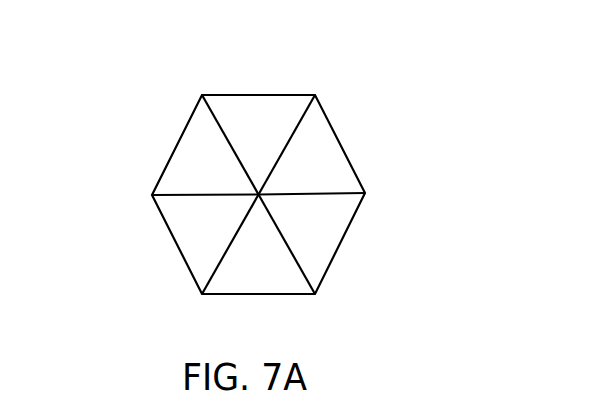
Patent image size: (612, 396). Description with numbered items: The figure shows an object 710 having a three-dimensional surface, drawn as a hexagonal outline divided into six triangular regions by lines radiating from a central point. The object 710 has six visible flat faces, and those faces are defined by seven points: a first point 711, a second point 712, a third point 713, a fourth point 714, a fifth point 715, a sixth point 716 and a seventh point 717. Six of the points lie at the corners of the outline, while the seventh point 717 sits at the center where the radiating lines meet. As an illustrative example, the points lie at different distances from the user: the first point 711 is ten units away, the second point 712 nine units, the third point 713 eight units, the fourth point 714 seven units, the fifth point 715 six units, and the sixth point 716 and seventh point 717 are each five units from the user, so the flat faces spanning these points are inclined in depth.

The object 710 is at (168, 114).
The first point 711 is at (152, 195).
The second point 712 is at (202, 95).
The third point 713 is at (315, 95).
The fourth point 714 is at (365, 193).
The fifth point 715 is at (315, 294).
The sixth point 716 is at (202, 294).
The seventh point 717 is at (260, 195).